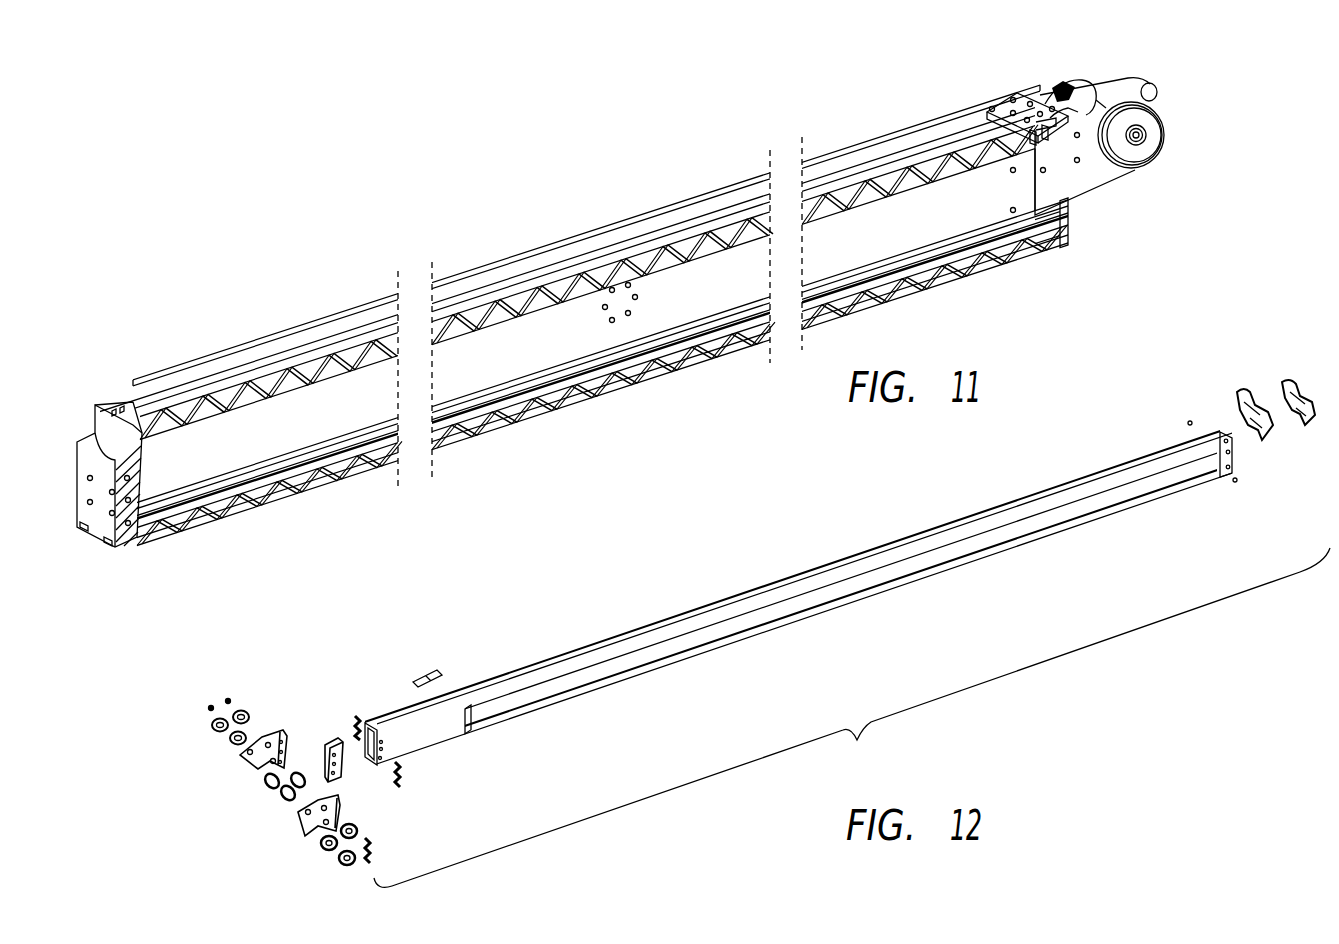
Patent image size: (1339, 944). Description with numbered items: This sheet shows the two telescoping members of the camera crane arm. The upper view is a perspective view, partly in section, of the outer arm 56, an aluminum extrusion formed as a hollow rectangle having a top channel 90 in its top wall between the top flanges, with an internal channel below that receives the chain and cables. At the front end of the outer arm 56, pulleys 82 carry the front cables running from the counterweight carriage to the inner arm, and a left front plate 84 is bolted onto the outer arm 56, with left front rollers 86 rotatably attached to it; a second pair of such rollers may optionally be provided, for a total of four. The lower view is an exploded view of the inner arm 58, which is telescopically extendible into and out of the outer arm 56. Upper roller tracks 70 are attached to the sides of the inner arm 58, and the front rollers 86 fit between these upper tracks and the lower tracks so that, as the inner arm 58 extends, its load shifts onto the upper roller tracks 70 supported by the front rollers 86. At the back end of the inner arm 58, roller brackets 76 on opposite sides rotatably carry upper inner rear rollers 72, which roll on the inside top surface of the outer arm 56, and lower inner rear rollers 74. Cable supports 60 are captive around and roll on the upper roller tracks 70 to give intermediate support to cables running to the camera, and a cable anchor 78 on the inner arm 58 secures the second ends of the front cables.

In FIG. 11, the outer arm 56 is at (562, 418).
In FIG. 11, the top channel 90 is at (300, 360).
In FIG. 11, the pulleys 82 is at (1068, 80).
In FIG. 11, the left front plate 84 is at (1083, 183).
In FIG. 11, the left front rollers 86 is at (1140, 166).
In FIG. 12, the inner arm 58 is at (945, 506).
In FIG. 12, the cable supports 60 is at (1245, 411).
In FIG. 12, the upper roller tracks 70 is at (805, 598).
In FIG. 12, the upper inner rear rollers 72 is at (243, 708).
In FIG. 12, the lower inner rear rollers 74 is at (354, 856).
In FIG. 12, the roller brackets 76 is at (278, 733).
In FIG. 12, the cable anchor 78 is at (421, 671).